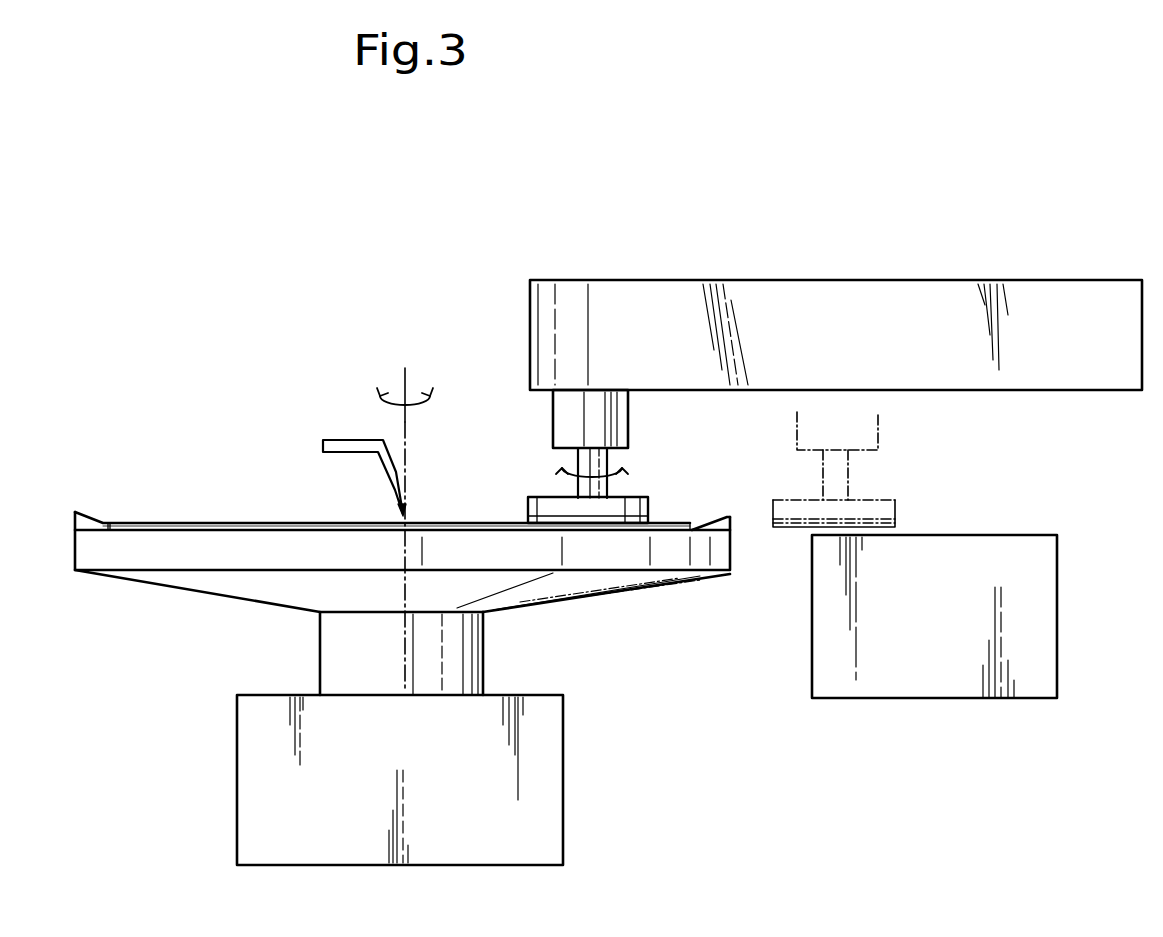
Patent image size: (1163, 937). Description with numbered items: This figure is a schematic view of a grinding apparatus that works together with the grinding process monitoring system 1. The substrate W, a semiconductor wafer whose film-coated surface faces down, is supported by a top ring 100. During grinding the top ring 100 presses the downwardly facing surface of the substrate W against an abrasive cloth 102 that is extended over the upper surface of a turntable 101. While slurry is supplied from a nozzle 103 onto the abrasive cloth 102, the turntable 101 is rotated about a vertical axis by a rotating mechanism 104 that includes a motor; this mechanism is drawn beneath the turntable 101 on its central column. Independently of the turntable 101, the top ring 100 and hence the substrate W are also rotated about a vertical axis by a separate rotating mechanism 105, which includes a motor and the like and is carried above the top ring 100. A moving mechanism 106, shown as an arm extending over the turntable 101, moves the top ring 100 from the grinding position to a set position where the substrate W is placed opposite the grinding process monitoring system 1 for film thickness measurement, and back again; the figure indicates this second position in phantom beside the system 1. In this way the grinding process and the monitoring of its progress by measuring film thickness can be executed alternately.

The grinding process monitoring system 1 is at (1057, 535).
The top ring 100 is at (640, 497).
The turntable 101 is at (598, 598).
The abrasive cloth 102 is at (456, 522).
The nozzle 103 is at (370, 470).
The rotating mechanism 104 is at (563, 802).
The rotating mechanism 105 is at (553, 408).
The moving mechanism 106 is at (940, 280).
The substrate W is at (552, 512).